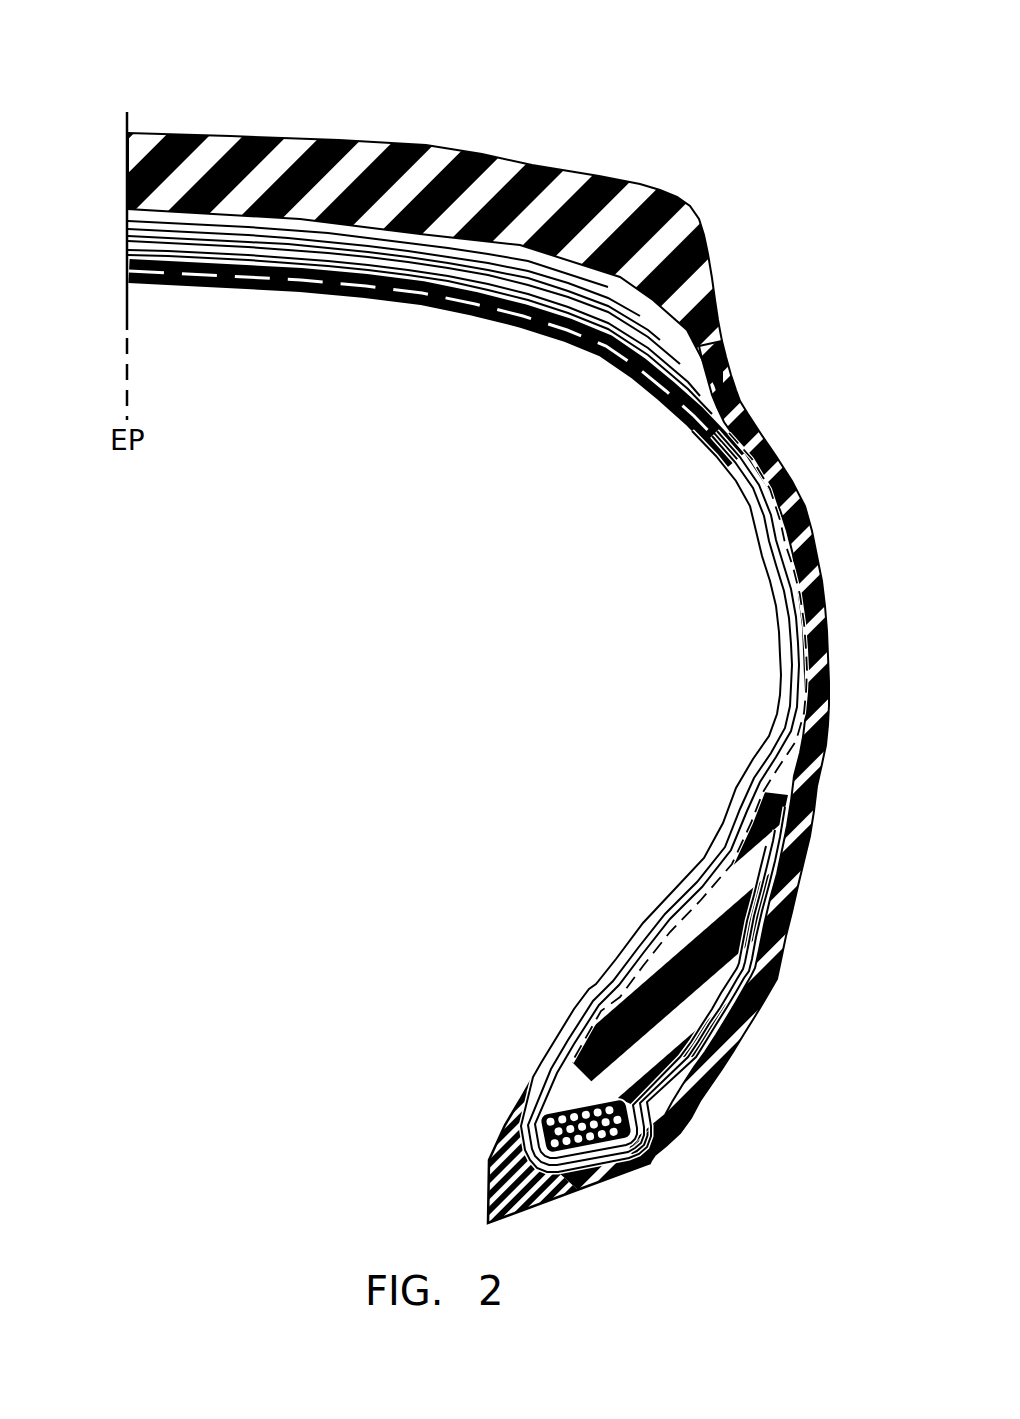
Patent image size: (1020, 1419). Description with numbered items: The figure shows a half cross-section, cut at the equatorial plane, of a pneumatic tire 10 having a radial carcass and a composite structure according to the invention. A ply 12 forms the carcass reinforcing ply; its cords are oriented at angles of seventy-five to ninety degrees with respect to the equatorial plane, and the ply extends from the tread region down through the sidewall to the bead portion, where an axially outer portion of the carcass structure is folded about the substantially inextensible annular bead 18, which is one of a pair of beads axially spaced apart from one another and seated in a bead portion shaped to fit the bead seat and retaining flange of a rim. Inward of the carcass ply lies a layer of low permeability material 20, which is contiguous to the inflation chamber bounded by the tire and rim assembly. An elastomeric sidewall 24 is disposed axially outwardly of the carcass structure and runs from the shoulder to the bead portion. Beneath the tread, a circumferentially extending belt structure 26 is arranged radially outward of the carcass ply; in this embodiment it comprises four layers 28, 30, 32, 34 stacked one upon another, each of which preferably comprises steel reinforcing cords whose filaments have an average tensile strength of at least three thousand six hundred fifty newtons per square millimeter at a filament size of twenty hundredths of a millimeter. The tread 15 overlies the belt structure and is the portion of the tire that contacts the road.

The pneumatic tire 10 is at (649, 51).
The ply 12 is at (623, 988).
The tread 15 is at (300, 148).
The annular bead 18 is at (585, 1143).
The layer of low permeability material 20 is at (728, 843).
The elastomeric sidewall 24 is at (789, 504).
The belt structure 26 is at (374, 290).
The belt layer 28 is at (127, 252).
The belt layer 30 is at (127, 242).
The belt layer 32 is at (127, 229).
The belt layer 34 is at (128, 222).